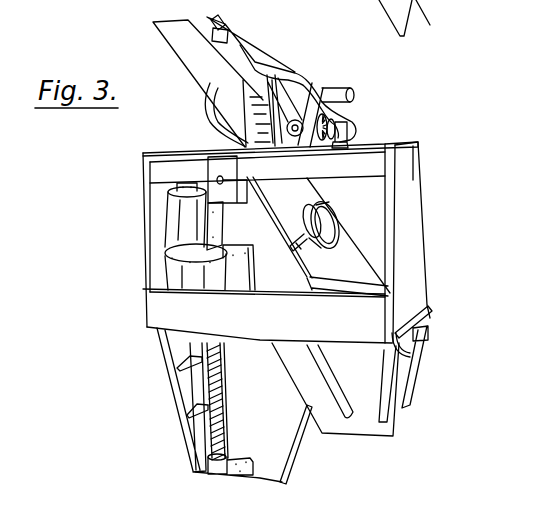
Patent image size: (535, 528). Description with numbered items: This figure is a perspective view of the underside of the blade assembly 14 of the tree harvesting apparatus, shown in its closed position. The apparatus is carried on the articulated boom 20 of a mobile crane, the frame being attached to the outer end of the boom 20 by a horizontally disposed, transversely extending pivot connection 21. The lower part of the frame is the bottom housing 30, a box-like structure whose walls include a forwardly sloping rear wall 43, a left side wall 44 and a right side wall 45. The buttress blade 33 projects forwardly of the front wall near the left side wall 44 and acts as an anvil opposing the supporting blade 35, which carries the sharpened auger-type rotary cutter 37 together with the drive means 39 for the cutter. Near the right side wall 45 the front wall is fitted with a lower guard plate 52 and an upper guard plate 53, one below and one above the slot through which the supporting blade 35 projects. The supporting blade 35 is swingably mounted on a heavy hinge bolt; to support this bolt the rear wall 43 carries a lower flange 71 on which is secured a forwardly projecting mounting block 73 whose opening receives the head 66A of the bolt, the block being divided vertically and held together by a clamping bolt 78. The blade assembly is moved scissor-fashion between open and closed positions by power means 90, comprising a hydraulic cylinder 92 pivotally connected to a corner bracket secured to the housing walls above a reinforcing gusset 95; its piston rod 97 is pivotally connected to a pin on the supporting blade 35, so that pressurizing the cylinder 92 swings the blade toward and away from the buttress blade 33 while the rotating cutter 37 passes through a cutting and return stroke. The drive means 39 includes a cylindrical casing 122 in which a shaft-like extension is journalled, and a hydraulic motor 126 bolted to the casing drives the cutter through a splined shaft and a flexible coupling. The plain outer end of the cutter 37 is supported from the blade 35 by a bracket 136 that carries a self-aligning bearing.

The assembly 14 is at (131, 324).
The articulated boom 20 is at (250, 43).
The pivot connection 21 is at (244, 30).
The bottom housing 30 is at (412, 288).
The buttress blade 33 is at (200, 386).
The supporting blade 35 is at (290, 450).
The rotary cutter 37 is at (216, 396).
The drive means 39 is at (156, 270).
The rear wall 43 is at (357, 143).
The left side wall 44 is at (142, 242).
The right side wall 45 is at (418, 258).
The lower guard plate 52 is at (365, 428).
The upper guard plate 53 is at (410, 383).
The head 66A is at (250, 199).
The lower flange 71 is at (155, 172).
The mounting block 73 is at (199, 165).
The clamping bolt 78 is at (266, 193).
The power means 90 is at (332, 212).
The hydraulic cylinder 92 is at (345, 232).
The reinforcing gusset 95 is at (385, 199).
The piston rod 97 is at (303, 252).
The cylindrical casing 122 is at (352, 62).
The hydraulic motor 126 is at (170, 218).
The bracket 136 is at (218, 470).